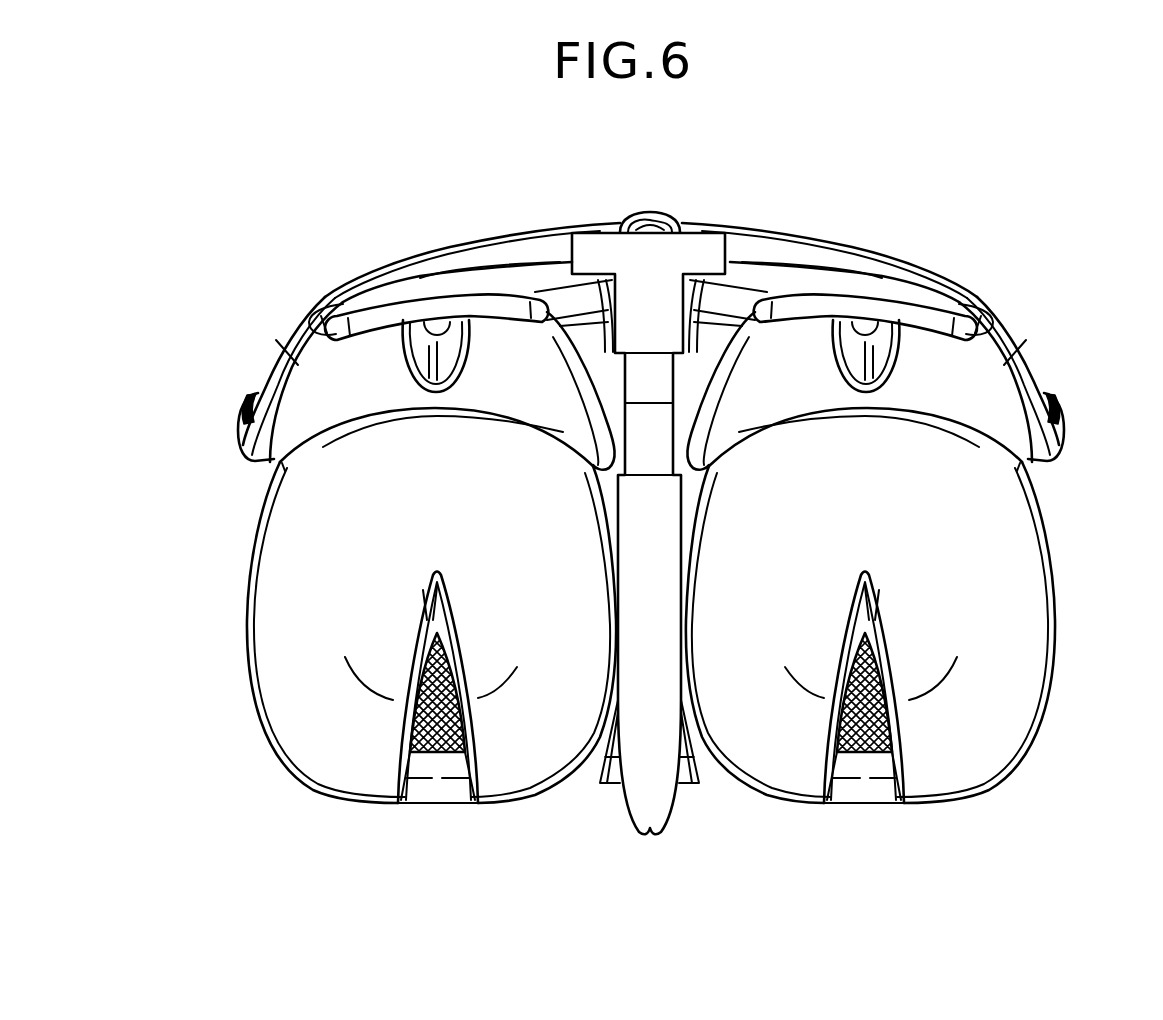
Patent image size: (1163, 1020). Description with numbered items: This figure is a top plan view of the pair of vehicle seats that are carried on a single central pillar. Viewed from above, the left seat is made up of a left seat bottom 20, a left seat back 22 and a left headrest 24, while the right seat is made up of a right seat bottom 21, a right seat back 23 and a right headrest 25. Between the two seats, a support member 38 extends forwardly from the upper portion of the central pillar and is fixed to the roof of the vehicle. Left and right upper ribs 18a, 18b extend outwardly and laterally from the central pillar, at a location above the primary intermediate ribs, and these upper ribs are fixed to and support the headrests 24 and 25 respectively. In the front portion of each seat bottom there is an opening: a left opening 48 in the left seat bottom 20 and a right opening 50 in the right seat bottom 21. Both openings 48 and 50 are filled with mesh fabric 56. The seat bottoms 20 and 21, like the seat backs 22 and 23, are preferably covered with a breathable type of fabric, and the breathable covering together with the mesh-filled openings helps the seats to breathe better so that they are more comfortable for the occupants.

The left upper rib 18a is at (777, 250).
The right upper rib 18b is at (530, 250).
The left seat bottom 20 is at (1093, 553).
The right seat bottom 21 is at (317, 563).
The left seat back 22 is at (963, 368).
The right seat back 23 is at (317, 377).
The left headrest 24 is at (778, 372).
The right headrest 25 is at (531, 374).
The support member 38 is at (717, 860).
The left opening 48 is at (870, 603).
The right opening 50 is at (438, 593).
The mesh fabric 56 is at (873, 840).